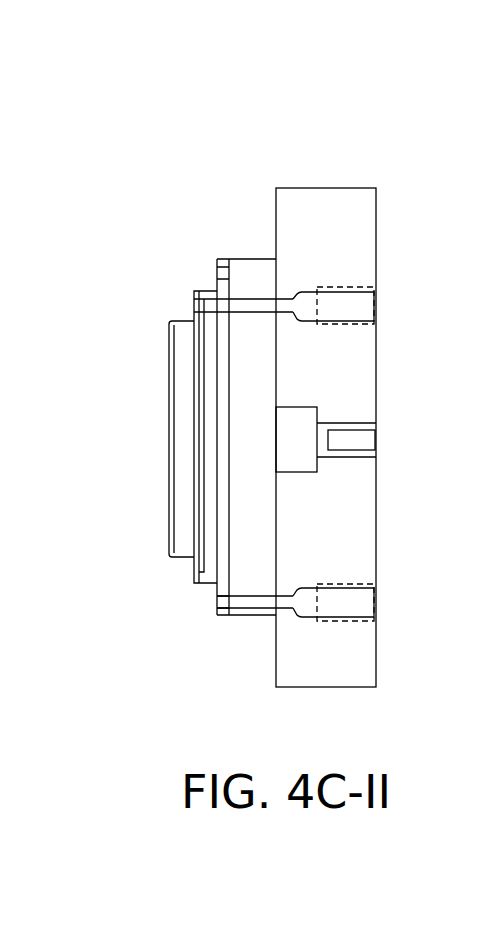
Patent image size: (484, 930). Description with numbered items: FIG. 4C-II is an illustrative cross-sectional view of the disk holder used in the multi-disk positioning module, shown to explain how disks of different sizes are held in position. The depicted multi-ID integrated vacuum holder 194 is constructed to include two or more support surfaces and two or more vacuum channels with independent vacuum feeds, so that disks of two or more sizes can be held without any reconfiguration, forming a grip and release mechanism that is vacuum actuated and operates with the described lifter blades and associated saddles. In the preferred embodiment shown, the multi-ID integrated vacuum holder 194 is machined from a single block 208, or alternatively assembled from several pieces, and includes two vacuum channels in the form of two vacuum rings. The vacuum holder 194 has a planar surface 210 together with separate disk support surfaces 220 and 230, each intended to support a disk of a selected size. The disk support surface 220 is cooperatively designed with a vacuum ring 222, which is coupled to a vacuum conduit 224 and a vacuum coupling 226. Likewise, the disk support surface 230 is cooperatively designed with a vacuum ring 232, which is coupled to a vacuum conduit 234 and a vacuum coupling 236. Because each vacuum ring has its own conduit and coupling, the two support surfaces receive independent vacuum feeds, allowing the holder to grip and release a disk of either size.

The multi-ID integrated vacuum holder 194 is at (275, 98).
The single block 208 is at (322, 208).
The planar surface 210 is at (170, 476).
The disk support surface 220 is at (195, 291).
The vacuum ring 222 is at (205, 307).
The vacuum conduit 224 is at (263, 307).
The vacuum coupling 226 is at (363, 310).
The disk support surface 230 is at (218, 266).
The vacuum ring 232 is at (222, 272).
The vacuum conduit 234 is at (263, 608).
The vacuum coupling 236 is at (376, 594).